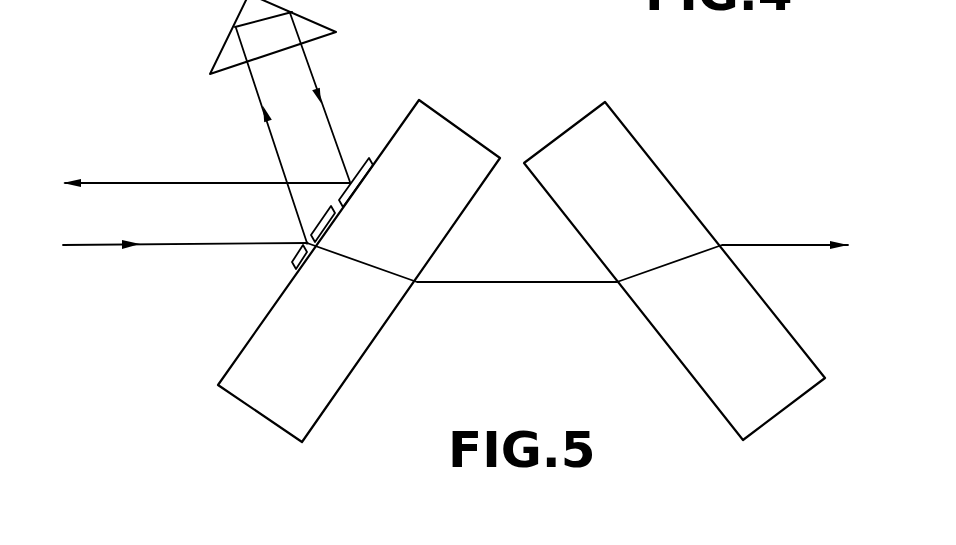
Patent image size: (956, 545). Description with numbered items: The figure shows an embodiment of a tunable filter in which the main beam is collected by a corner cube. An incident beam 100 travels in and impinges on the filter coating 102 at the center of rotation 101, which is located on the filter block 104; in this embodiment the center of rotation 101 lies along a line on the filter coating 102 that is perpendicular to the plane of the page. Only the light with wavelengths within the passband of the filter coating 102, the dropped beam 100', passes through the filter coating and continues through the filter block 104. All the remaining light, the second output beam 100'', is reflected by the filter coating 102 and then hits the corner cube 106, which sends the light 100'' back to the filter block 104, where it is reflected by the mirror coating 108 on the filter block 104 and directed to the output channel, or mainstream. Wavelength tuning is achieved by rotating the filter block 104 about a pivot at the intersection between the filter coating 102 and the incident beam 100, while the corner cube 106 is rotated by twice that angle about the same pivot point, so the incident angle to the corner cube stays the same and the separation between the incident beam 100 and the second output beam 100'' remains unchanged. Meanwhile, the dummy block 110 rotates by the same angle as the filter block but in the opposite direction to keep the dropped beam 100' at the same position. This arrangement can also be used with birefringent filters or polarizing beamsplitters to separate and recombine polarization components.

The incident beam 100 is at (185, 273).
The dropped beam 100' is at (577, 289).
The second output beam 100'' is at (206, 128).
The center of rotation 101 is at (305, 241).
The filter coating 102 is at (295, 258).
The filter block 104 is at (478, 132).
The corner cube 106 is at (230, 36).
The mirror coating 108 is at (368, 160).
The dummy block 110 is at (653, 160).